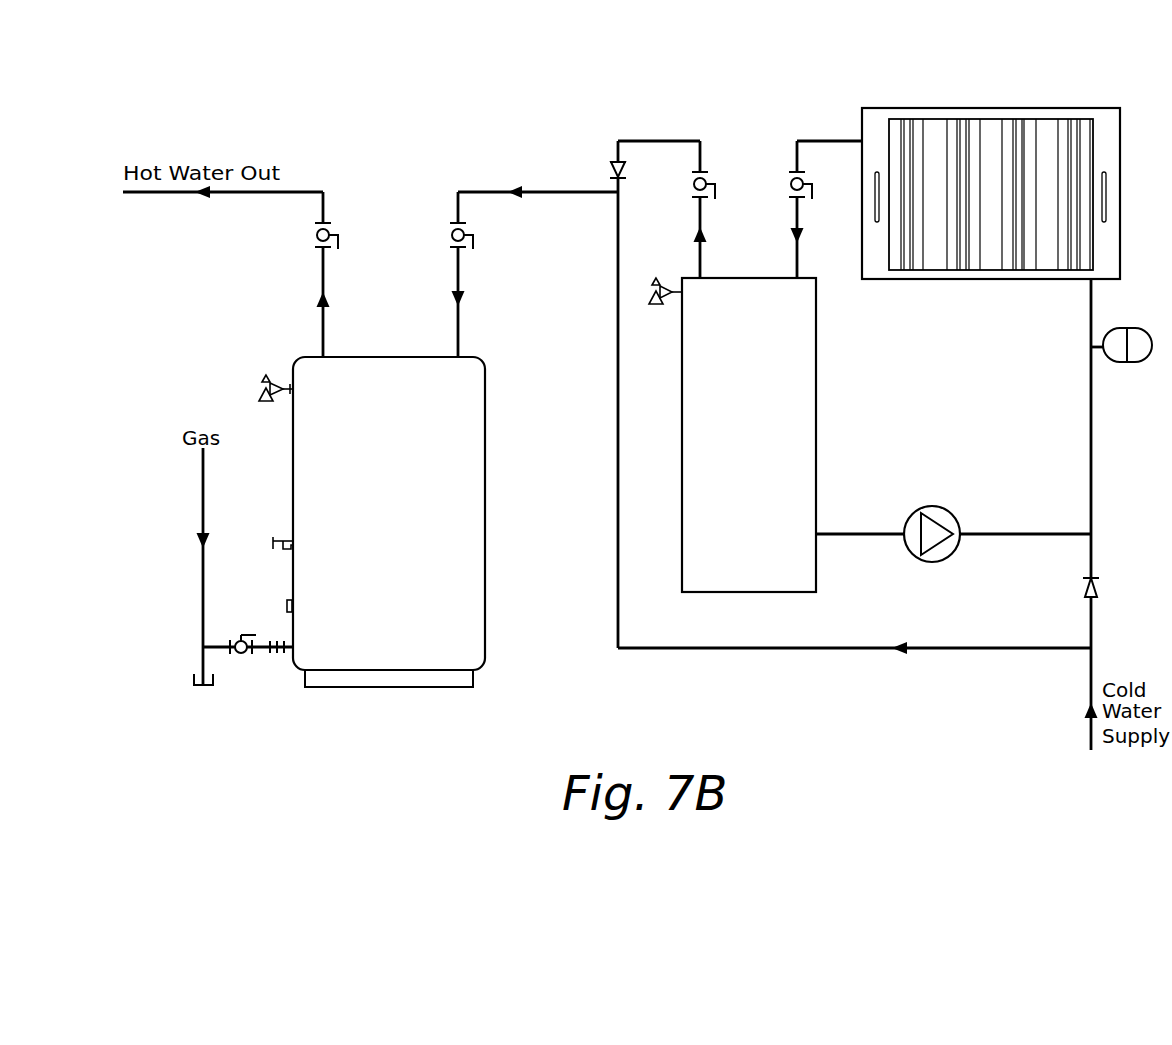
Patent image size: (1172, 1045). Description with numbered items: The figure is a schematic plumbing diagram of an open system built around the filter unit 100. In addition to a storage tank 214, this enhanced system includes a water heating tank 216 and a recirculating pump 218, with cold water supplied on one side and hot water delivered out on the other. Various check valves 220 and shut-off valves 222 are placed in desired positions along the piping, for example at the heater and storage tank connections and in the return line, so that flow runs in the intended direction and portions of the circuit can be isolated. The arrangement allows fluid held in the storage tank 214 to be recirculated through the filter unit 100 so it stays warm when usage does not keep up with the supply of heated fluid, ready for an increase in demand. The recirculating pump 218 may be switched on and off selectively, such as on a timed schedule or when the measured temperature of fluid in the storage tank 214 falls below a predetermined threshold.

The filter unit 100 is at (979, 74).
The storage tank 214 is at (816, 450).
The water heating tank 216 is at (485, 528).
The recirculating pump 218 is at (932, 505).
The check valves 220 is at (611, 167).
The shut-off valves 222 is at (453, 235).